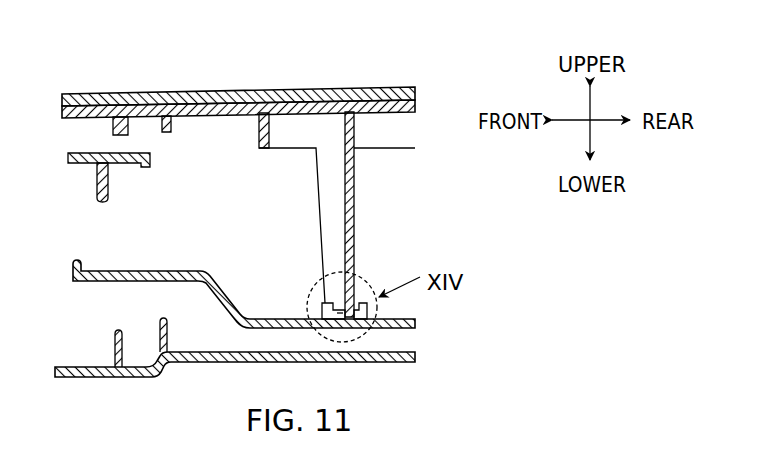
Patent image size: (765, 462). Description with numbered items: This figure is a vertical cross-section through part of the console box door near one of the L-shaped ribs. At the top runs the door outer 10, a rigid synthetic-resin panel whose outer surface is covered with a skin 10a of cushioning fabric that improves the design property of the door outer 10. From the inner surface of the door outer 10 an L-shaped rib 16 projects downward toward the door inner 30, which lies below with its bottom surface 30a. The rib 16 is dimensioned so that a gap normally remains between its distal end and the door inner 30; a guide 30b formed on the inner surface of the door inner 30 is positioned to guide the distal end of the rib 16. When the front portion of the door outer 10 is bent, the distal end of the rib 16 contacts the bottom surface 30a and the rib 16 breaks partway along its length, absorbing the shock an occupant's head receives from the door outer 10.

The door outer 10 is at (238, 160).
The skin 10a is at (322, 93).
The L-shaped rib 16 is at (346, 203).
The door inner 30 is at (244, 268).
The bottom surface 30a is at (285, 317).
The guide 30b is at (368, 289).